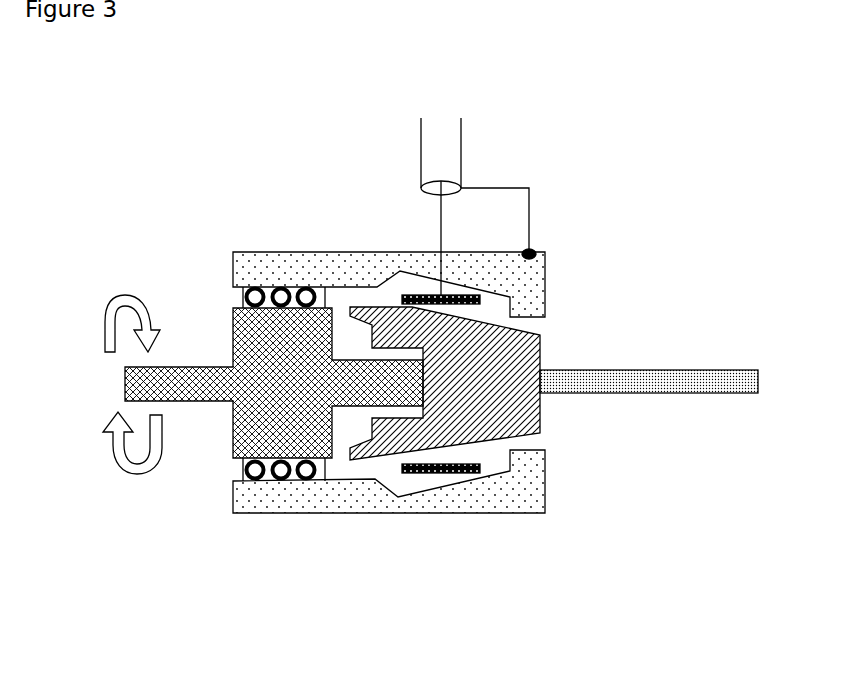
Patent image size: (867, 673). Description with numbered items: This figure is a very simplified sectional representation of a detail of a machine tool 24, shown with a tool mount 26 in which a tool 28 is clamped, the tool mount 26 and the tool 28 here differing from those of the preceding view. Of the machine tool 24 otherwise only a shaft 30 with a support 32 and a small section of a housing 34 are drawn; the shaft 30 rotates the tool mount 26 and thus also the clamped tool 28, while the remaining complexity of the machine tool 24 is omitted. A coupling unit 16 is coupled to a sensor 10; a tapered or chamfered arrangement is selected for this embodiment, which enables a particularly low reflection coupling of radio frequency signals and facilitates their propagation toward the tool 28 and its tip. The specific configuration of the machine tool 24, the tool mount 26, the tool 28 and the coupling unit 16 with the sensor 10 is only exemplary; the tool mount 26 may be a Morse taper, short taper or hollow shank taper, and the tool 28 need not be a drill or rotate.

The sensor 10 is at (481, 200).
The coupling unit 16 is at (473, 432).
The machine tool 24 is at (282, 321).
The tool mount 26 is at (491, 387).
The tool 28 is at (652, 352).
The shaft 30 is at (263, 403).
The support 32 is at (246, 375).
The housing 34 is at (389, 260).